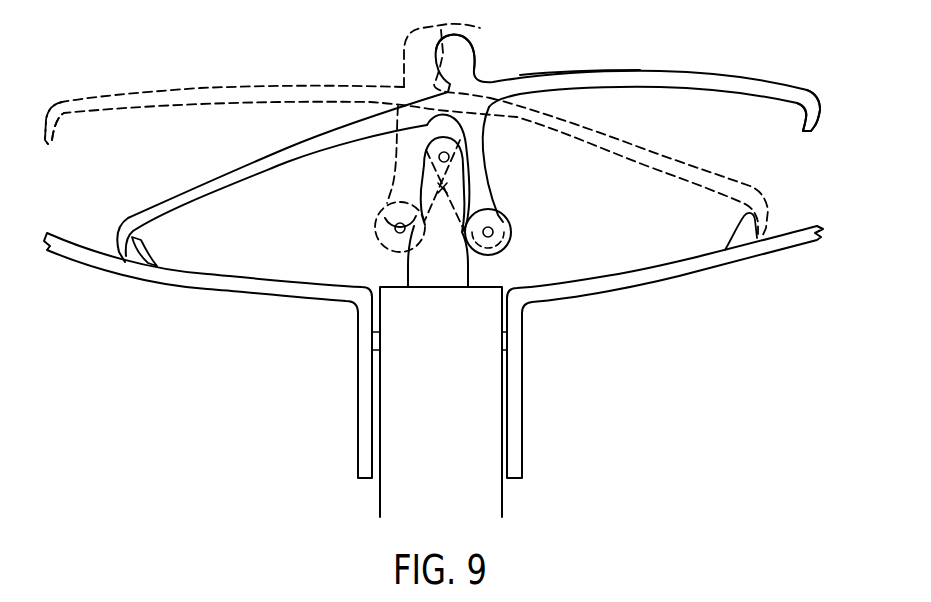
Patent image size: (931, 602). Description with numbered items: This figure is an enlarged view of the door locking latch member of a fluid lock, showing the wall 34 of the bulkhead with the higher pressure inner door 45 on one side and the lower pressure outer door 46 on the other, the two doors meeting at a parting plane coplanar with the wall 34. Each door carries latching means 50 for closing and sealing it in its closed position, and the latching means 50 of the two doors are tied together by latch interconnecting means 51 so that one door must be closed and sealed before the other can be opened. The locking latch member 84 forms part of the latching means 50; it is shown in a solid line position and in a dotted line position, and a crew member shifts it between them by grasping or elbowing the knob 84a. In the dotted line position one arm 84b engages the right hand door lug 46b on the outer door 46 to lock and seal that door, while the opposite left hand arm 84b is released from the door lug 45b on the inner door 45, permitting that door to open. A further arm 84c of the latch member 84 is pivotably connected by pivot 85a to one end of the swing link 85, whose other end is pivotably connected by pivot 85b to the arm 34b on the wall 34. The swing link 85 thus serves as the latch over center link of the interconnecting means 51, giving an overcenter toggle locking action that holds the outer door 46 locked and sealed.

The wall 34 is at (505, 497).
The arm 34b is at (460, 273).
The inner door 45 is at (230, 290).
The door lug 45b is at (143, 252).
The outer door 46 is at (742, 263).
The right hand door lug 46b is at (743, 220).
The latching means 50 is at (560, 65).
The latch interconnecting means 51 is at (506, 161).
The locking latch member 84 is at (663, 70).
The knob 84a is at (475, 47).
The arm 84b is at (812, 131).
The arm 84c is at (489, 181).
The swing link 85 is at (395, 203).
The pivot 85a is at (494, 234).
The pivot 85b is at (439, 157).